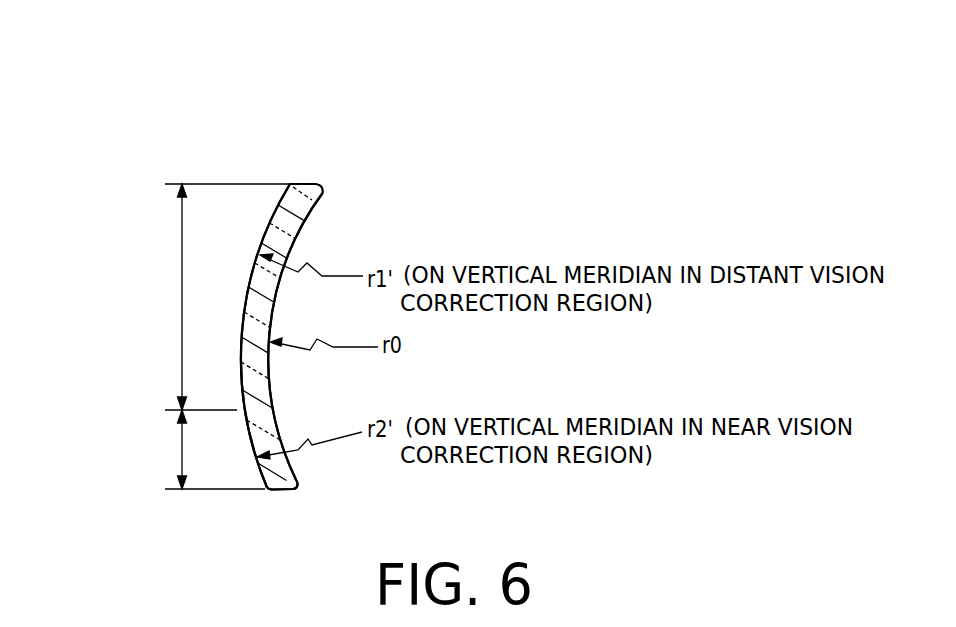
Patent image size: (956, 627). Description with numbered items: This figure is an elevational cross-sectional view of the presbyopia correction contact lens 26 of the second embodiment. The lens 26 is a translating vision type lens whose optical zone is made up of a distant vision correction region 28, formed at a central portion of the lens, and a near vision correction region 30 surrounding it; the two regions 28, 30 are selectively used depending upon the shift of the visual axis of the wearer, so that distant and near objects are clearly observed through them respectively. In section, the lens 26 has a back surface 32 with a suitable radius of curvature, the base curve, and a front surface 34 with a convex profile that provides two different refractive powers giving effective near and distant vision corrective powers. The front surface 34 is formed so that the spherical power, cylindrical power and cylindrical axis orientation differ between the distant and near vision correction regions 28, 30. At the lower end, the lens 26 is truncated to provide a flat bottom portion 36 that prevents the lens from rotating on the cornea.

The presbyopia correction contact lens 26 is at (330, 163).
The distant vision correction region 28 is at (165, 297).
The near vision correction region 30 is at (145, 460).
The back surface 32 is at (296, 237).
The front surface 34 is at (251, 278).
The truncated flat bottom portion 36 is at (283, 491).